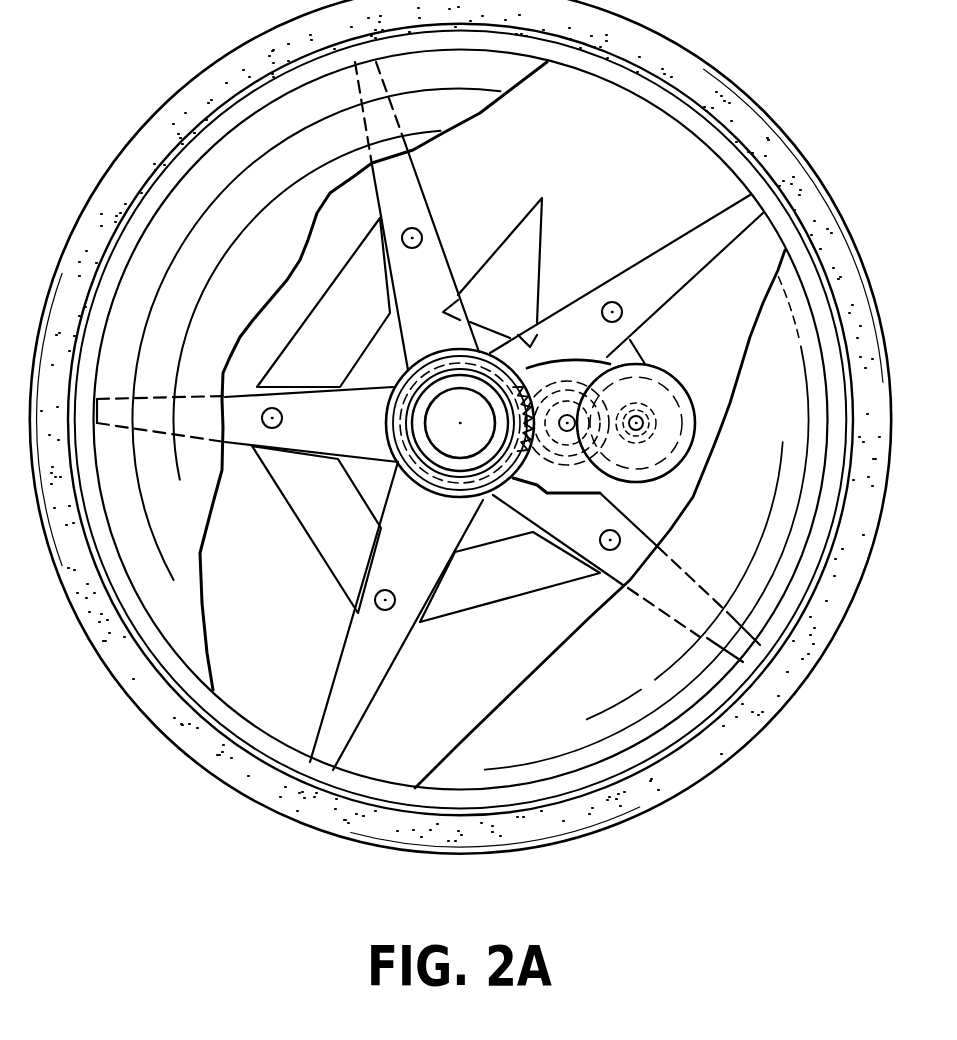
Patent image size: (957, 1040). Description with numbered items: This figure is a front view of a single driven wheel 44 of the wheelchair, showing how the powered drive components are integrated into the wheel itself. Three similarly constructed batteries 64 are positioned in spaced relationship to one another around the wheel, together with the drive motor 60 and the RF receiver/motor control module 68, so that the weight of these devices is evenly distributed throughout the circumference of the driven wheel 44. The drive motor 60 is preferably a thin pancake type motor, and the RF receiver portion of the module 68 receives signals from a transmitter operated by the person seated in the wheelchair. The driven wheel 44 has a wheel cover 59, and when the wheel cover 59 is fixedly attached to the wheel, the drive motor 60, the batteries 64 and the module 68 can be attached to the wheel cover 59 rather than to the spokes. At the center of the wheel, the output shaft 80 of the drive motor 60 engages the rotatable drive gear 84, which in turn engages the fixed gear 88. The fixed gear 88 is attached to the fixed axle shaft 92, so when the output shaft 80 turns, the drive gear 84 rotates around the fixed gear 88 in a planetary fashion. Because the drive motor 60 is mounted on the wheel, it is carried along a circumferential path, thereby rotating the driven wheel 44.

The driven wheel 44 is at (750, 98).
The wheel cover 59 is at (455, 108).
The drive motor 60 is at (652, 364).
The battery 64 is at (510, 584).
The RF receiver/motor control module 68 is at (512, 306).
The output shaft 80 is at (642, 440).
The rotatable drive gear 84 is at (565, 478).
The fixed gear 88 is at (388, 412).
The fixed axle shaft 92 is at (455, 442).